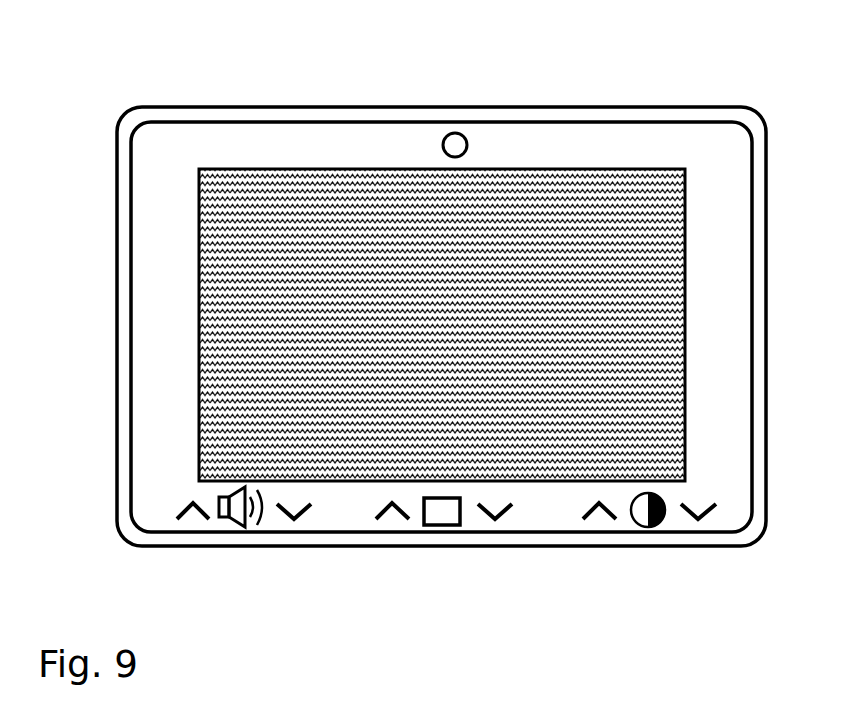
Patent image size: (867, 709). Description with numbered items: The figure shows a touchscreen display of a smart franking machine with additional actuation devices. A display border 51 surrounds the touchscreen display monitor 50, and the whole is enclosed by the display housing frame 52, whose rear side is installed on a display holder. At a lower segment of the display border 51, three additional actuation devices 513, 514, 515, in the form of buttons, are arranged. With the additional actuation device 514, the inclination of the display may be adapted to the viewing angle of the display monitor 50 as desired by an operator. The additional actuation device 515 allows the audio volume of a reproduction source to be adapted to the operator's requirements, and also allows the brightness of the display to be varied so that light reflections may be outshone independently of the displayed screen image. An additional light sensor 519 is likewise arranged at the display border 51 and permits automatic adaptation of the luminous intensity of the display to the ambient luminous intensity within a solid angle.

The touchscreen display monitor 50 is at (625, 253).
The display border 51 is at (727, 400).
The display housing frame 52 is at (767, 495).
The light sensor 519 is at (455, 133).
The additional actuation device 513 is at (202, 552).
The additional actuation device 514 is at (405, 550).
The additional actuation device 515 is at (690, 555).